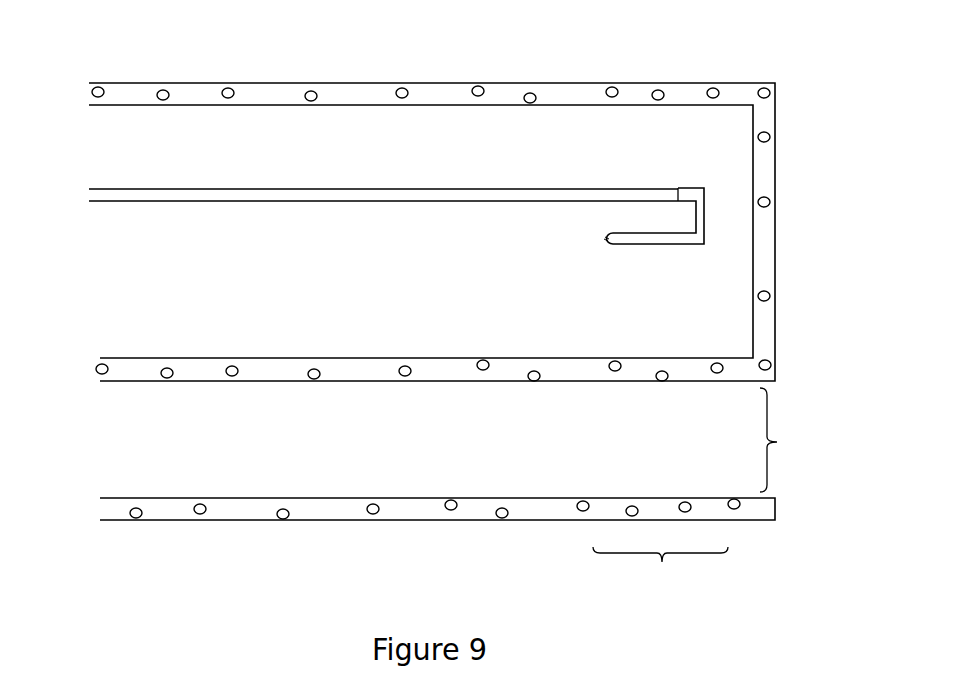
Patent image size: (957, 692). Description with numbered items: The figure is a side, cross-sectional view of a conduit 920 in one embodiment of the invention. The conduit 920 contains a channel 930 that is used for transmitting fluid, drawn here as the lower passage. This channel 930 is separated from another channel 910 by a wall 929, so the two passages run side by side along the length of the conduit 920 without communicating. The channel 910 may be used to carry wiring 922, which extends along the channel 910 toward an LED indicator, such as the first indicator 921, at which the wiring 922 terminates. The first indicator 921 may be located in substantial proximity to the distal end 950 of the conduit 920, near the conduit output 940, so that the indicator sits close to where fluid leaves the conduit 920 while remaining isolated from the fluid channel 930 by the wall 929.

The conduit 920 is at (212, 40).
The channel 910 is at (165, 163).
The wiring 922 is at (457, 189).
The first indicator 921 is at (697, 188).
The wall 929 is at (645, 358).
The channel 930 is at (175, 439).
The conduit output 940 is at (778, 442).
The distal end 950 is at (662, 562).